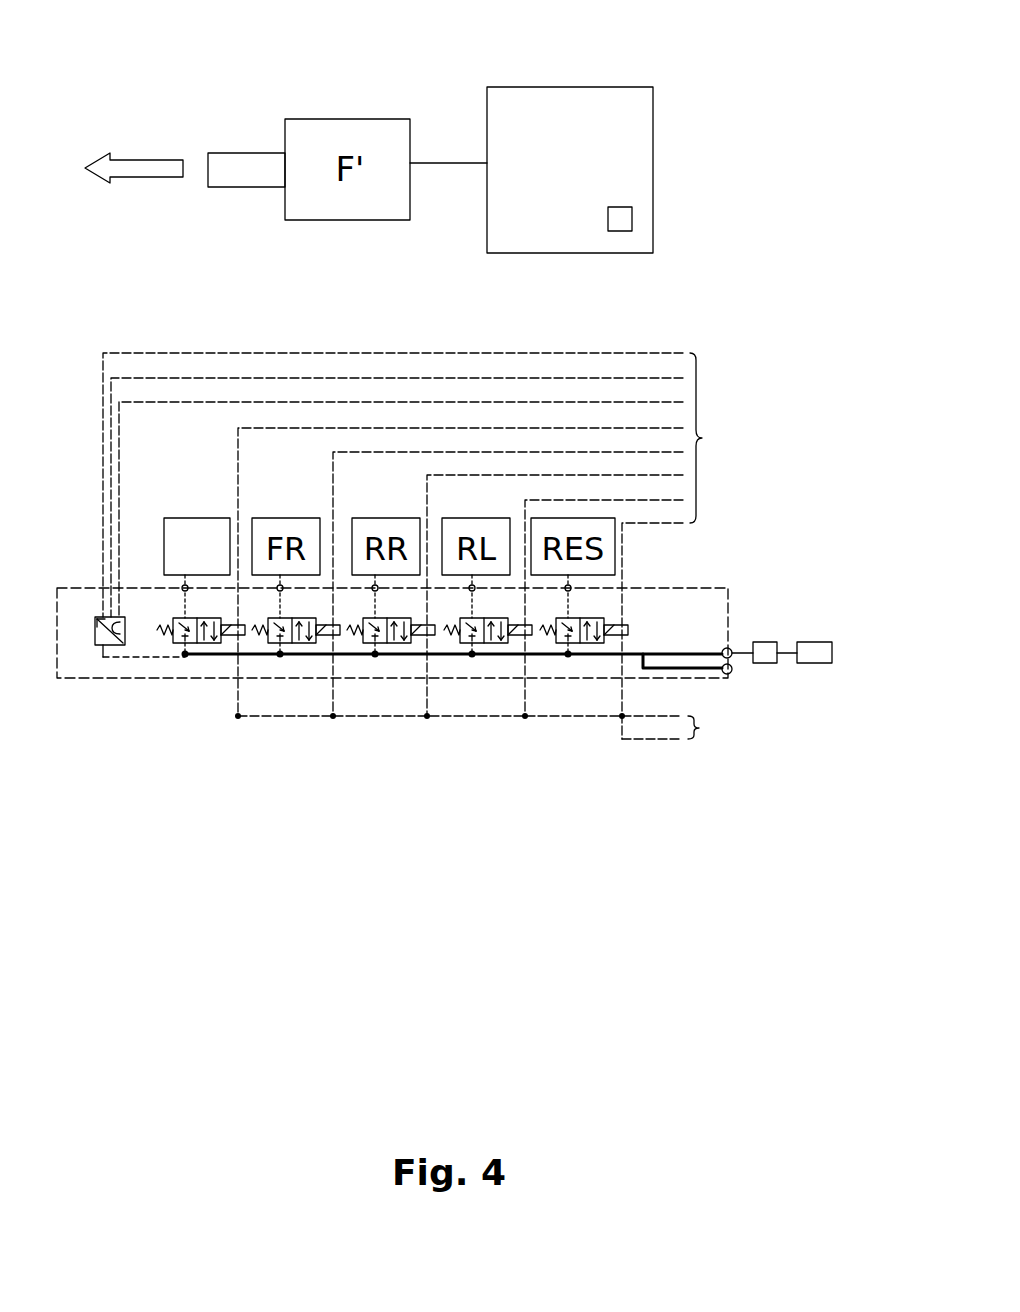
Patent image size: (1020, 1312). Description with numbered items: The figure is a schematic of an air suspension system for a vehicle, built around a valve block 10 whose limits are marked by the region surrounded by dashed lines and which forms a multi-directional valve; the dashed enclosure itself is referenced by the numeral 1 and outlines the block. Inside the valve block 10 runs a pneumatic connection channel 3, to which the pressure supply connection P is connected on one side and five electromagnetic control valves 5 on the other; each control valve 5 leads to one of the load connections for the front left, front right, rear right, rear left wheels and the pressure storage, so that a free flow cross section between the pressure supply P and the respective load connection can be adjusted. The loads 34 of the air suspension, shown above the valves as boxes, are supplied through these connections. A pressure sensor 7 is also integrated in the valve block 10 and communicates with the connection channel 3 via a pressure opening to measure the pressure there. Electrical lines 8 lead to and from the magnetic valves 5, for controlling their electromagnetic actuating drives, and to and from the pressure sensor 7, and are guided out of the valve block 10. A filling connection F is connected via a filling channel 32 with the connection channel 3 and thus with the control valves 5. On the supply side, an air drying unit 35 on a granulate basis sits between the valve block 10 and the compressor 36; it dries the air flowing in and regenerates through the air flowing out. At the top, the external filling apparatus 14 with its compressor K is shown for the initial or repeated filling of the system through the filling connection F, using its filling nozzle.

The pressure medium unit housing 1 is at (118, 680).
The pneumatic connection channel 3 is at (403, 657).
The electromagnetic control valve 5 is at (200, 660).
The pressure sensor 7 is at (95, 632).
The electrical lines 8 is at (423, 546).
The valve block 10 is at (142, 675).
The external filling apparatus 14 is at (600, 105).
The filling channel 32 is at (668, 669).
The loads 34 is at (187, 518).
The air drying unit 35 is at (765, 655).
The compressor 36 is at (810, 652).
The compressor K is at (620, 219).
The pressure supply connection P is at (731, 650).
The filling connection F is at (733, 670).